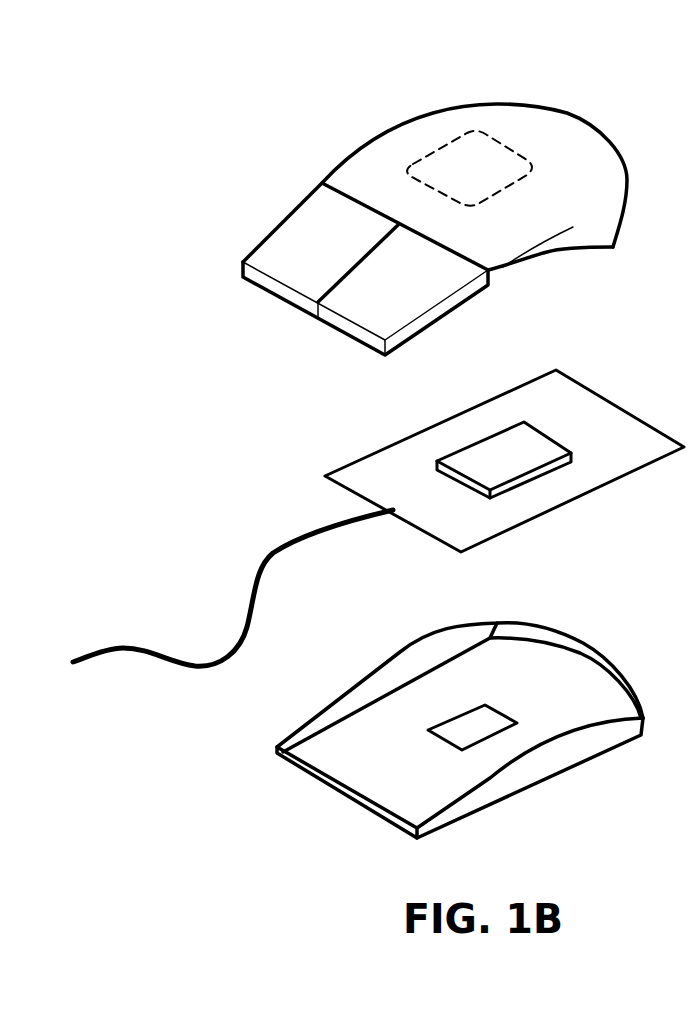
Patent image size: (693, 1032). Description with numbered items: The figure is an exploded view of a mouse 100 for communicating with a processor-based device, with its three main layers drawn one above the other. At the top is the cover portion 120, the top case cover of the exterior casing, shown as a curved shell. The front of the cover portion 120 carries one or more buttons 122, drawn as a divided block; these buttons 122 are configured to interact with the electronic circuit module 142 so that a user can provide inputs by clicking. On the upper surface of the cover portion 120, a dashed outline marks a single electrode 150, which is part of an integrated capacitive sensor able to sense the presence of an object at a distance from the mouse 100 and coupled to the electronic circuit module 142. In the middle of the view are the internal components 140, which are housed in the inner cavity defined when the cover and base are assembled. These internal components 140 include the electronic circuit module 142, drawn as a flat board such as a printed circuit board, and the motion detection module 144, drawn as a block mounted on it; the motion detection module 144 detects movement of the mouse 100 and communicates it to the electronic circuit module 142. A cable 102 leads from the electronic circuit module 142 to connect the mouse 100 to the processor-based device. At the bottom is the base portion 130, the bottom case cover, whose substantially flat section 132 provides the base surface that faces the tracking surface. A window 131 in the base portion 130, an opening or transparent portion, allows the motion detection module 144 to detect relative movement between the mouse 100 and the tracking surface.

The mouse 100 is at (620, 73).
The cable 102 is at (137, 652).
The cover portion 120 is at (387, 165).
The buttons 122 is at (323, 223).
The electrode 150 is at (493, 153).
The internal components 140 is at (323, 476).
The electronic circuit module 142 is at (598, 412).
The motion detection module 144 is at (495, 458).
The base portion 130 is at (555, 752).
The window 131 is at (443, 740).
The substantially flat section 132 is at (547, 677).